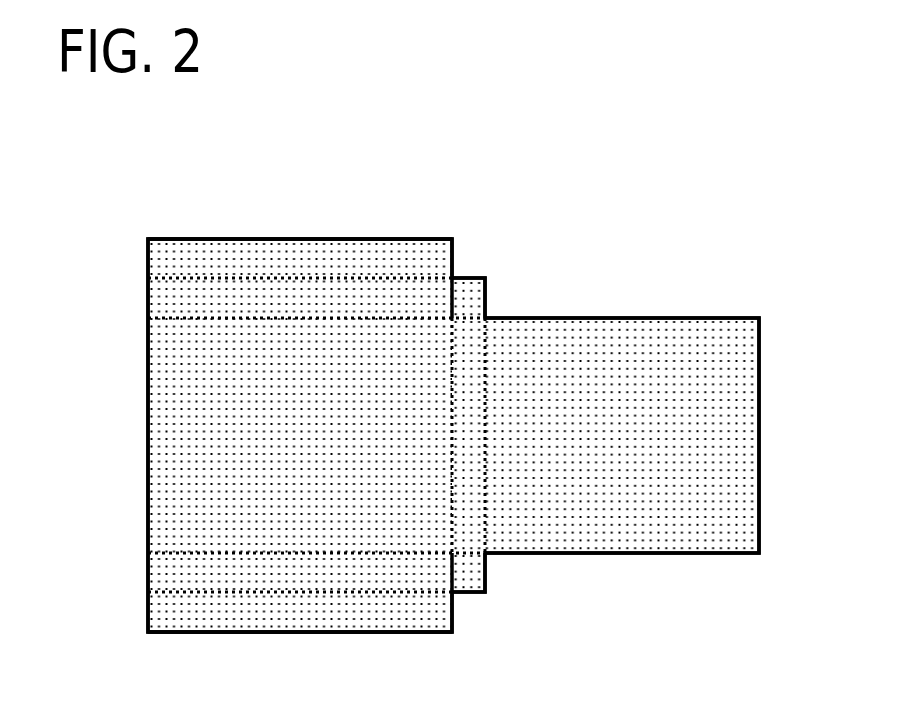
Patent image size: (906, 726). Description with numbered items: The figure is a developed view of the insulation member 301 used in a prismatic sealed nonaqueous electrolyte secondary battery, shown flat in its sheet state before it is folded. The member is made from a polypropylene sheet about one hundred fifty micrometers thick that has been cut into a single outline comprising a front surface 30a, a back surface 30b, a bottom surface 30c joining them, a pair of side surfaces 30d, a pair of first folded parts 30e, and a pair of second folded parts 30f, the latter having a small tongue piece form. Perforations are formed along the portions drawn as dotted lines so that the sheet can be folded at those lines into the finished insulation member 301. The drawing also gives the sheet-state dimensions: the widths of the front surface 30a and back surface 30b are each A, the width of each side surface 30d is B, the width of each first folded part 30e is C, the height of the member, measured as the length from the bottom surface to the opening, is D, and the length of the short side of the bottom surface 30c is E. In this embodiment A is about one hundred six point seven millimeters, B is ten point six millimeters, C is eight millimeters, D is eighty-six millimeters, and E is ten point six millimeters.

The insulation member 301 is at (117, 190).
The front surface 30a is at (745, 541).
The back surface 30b is at (213, 540).
The bottom surface 30c is at (470, 397).
The side surface 30d is at (169, 298).
The first folded part 30e is at (410, 252).
The second folded part 30f is at (477, 290).
The width of front and back surfaces A is at (759, 318).
The width of side surface B is at (229, 240).
The width of first folded part C is at (286, 560).
The height of insulation member D is at (452, 378).
The length of short side of bottom surface E is at (516, 479).